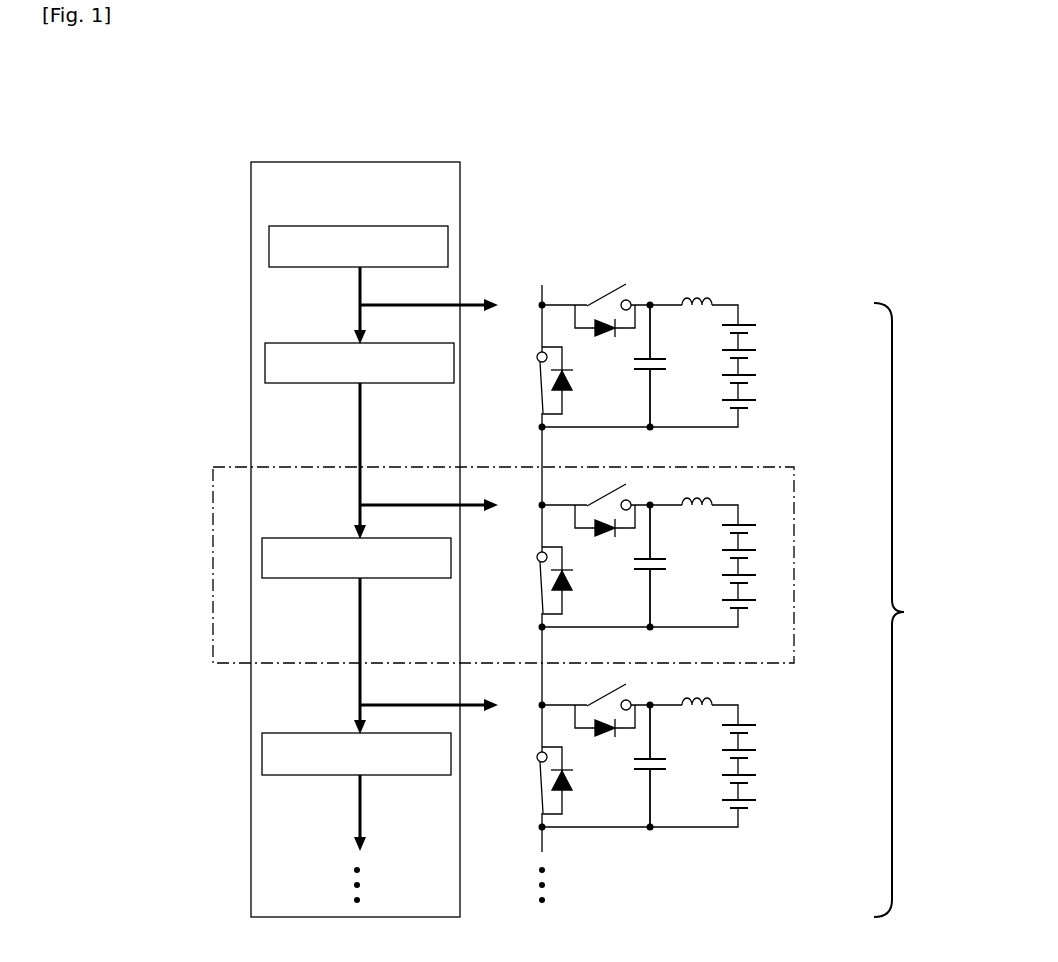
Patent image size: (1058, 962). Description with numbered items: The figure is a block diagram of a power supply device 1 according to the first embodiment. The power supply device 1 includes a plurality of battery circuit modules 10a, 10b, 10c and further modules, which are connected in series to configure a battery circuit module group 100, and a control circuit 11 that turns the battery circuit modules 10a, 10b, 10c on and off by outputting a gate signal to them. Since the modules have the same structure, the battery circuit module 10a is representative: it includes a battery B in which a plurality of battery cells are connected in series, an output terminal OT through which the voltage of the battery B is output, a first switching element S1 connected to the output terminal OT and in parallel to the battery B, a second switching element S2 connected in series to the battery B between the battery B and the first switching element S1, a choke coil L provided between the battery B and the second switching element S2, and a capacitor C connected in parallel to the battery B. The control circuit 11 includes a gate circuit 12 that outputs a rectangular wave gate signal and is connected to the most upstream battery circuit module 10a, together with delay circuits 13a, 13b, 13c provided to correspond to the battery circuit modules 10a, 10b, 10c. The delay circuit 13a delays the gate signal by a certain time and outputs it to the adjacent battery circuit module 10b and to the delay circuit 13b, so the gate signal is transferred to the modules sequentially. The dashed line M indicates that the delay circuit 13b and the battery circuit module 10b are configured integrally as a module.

The power supply device 1 is at (190, 143).
The control circuit 11 is at (251, 204).
The gate circuit 12 is at (269, 246).
The delay circuit 13a is at (265, 362).
The delay circuit 13b is at (262, 558).
The delay circuit 13c is at (262, 755).
The battery circuit module 10a is at (672, 313).
The battery circuit module 10b is at (741, 487).
The battery circuit module 10c is at (751, 833).
The dashed line M is at (213, 505).
The first switching element S1 is at (527, 381).
The second switching element S2 is at (608, 280).
The choke coil L is at (697, 278).
The capacitor C is at (661, 381).
The battery B is at (763, 357).
The output terminal OT is at (540, 302).
The battery circuit module group 100 is at (912, 610).